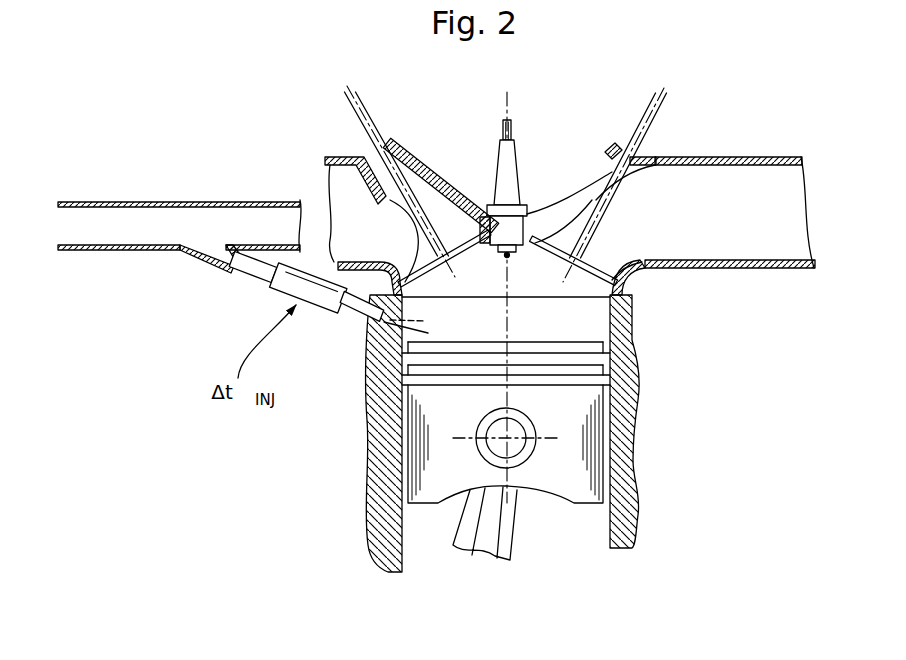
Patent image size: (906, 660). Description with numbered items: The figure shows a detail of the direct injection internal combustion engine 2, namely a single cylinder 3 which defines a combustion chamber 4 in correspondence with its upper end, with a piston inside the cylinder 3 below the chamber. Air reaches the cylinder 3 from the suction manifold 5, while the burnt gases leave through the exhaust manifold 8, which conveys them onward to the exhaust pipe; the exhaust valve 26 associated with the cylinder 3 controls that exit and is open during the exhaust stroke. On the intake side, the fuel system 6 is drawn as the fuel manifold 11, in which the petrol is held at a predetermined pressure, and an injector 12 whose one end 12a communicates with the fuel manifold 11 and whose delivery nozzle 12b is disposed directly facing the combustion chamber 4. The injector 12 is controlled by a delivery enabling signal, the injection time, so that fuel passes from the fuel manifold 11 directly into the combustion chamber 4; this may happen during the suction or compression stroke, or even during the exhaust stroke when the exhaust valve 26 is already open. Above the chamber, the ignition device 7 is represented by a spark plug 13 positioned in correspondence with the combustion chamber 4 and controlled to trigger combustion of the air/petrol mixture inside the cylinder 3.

The direct injection internal combustion engine 2 is at (641, 472).
The cylinder 3 is at (643, 396).
The combustion chamber 4 is at (605, 313).
The suction manifold 5 is at (455, 221).
The fuel system 6 is at (157, 186).
The ignition device 7 is at (523, 168).
The exhaust manifold 8 is at (788, 258).
The fuel manifold 11 is at (111, 216).
The injector 12 is at (262, 287).
The end of the injector 12a is at (217, 250).
The delivery nozzle 12b is at (371, 330).
The spark plug 13 is at (535, 215).
The exhaust valve 26 is at (598, 250).